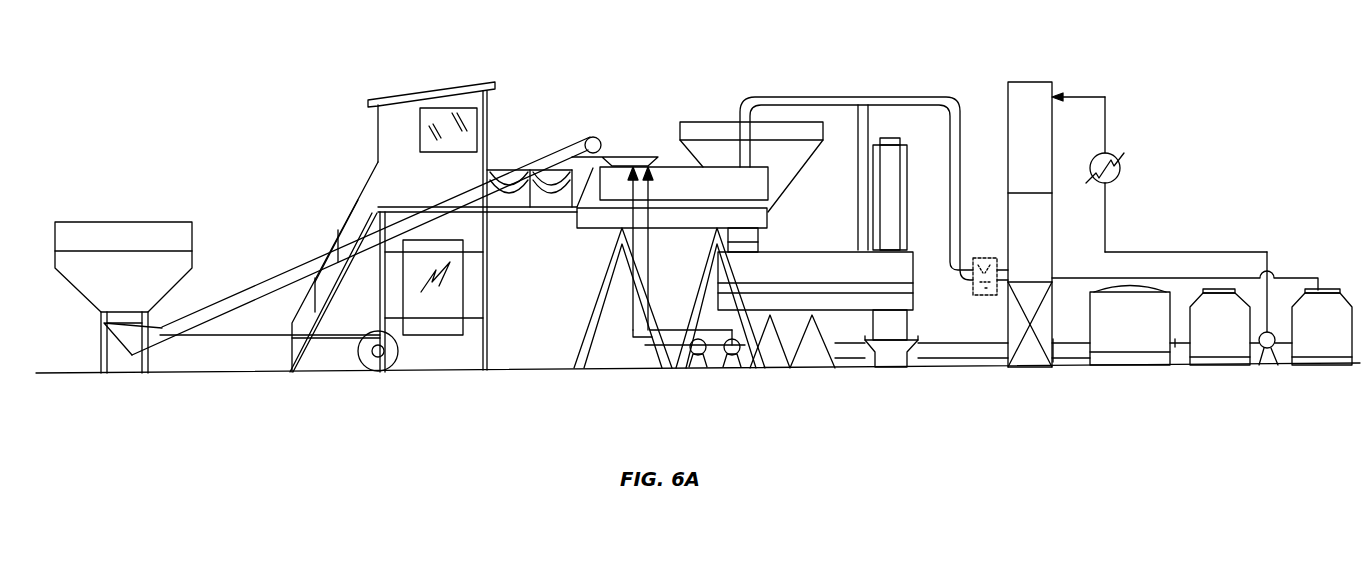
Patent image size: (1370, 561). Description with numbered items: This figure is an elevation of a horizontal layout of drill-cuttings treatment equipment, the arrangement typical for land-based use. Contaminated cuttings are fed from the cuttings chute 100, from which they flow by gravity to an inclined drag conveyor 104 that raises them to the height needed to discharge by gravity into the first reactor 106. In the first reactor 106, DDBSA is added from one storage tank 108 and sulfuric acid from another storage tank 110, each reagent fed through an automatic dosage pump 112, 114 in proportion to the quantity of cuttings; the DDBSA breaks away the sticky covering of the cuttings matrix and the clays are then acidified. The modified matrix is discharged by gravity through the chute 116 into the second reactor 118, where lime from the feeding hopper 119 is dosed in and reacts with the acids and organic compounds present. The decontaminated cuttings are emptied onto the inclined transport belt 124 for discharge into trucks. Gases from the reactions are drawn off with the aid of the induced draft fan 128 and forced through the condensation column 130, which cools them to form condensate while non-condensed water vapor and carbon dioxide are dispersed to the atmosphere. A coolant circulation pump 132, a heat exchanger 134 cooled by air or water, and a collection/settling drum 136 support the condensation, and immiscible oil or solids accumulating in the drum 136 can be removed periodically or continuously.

The cuttings chute 100 is at (145, 294).
The inclined drag conveyor 104 is at (297, 268).
The first reactor 106 is at (704, 195).
The feeding hopper 119 is at (732, 143).
The chute 116 is at (760, 237).
The second reactor 118 is at (838, 279).
The inclined transport belt 124 is at (923, 159).
The induced draft fan 128 is at (958, 294).
The condensation column 130 is at (1030, 224).
The heat exchanger 134 is at (1142, 163).
The automatic dosage pump 114 is at (674, 373).
The automatic dosage pump 112 is at (759, 373).
The storage tank 110 is at (1152, 341).
The storage tank 108 is at (1240, 341).
The collection/settling drum 136 is at (1343, 341).
The coolant circulation pump 132 is at (1247, 367).